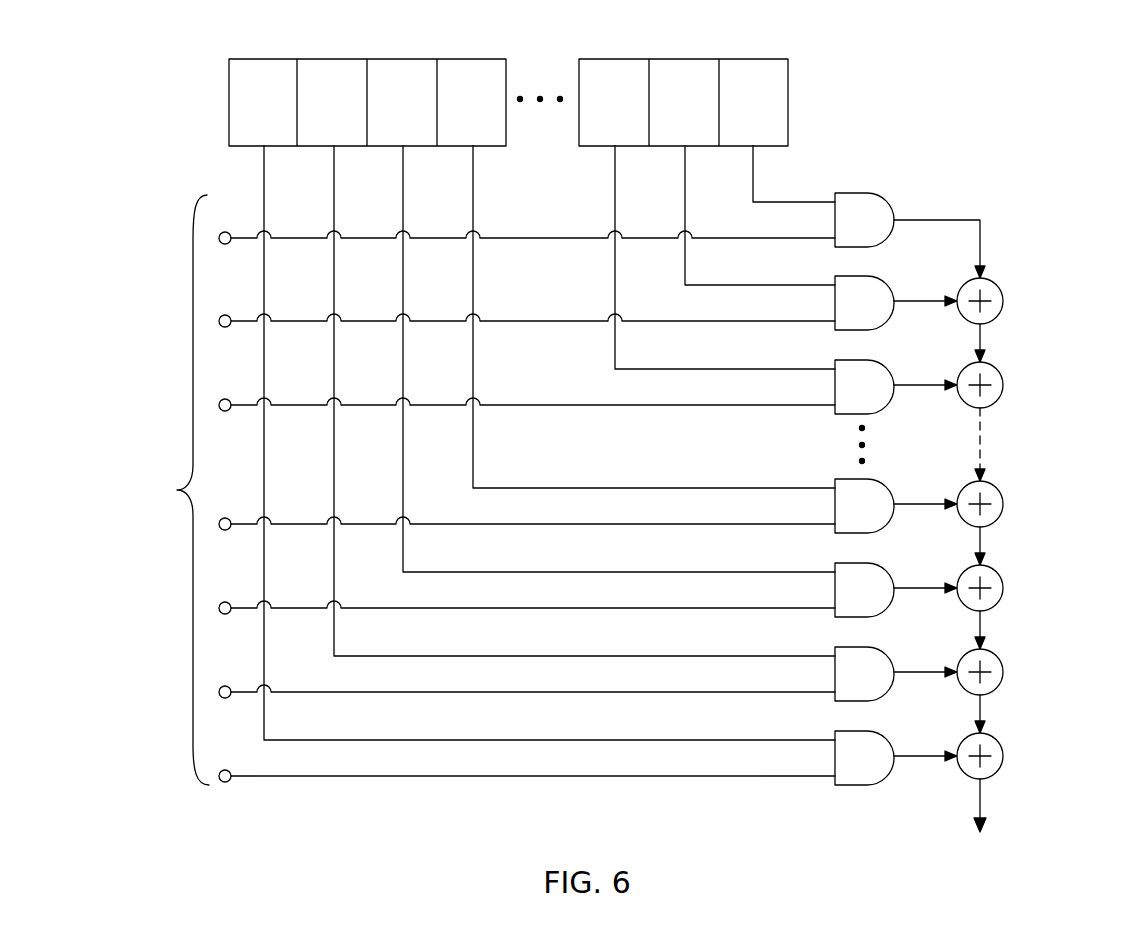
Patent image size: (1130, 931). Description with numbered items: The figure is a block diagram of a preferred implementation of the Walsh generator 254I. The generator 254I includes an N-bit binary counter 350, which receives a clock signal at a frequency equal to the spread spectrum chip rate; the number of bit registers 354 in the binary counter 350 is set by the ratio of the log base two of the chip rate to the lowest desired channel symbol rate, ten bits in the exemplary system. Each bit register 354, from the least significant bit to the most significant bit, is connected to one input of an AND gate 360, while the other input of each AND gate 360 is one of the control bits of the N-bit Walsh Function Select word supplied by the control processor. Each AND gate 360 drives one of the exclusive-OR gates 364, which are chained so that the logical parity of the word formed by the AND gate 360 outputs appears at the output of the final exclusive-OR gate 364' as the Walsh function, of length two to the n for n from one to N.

The Walsh generator 254I is at (1008, 70).
The N-bit binary counter 350 is at (562, 85).
The bit register 354 is at (252, 58).
The AND gate 360 is at (861, 193).
The exclusive-OR gate 364 is at (1005, 472).
The exclusive-OR gate 364' is at (1013, 744).